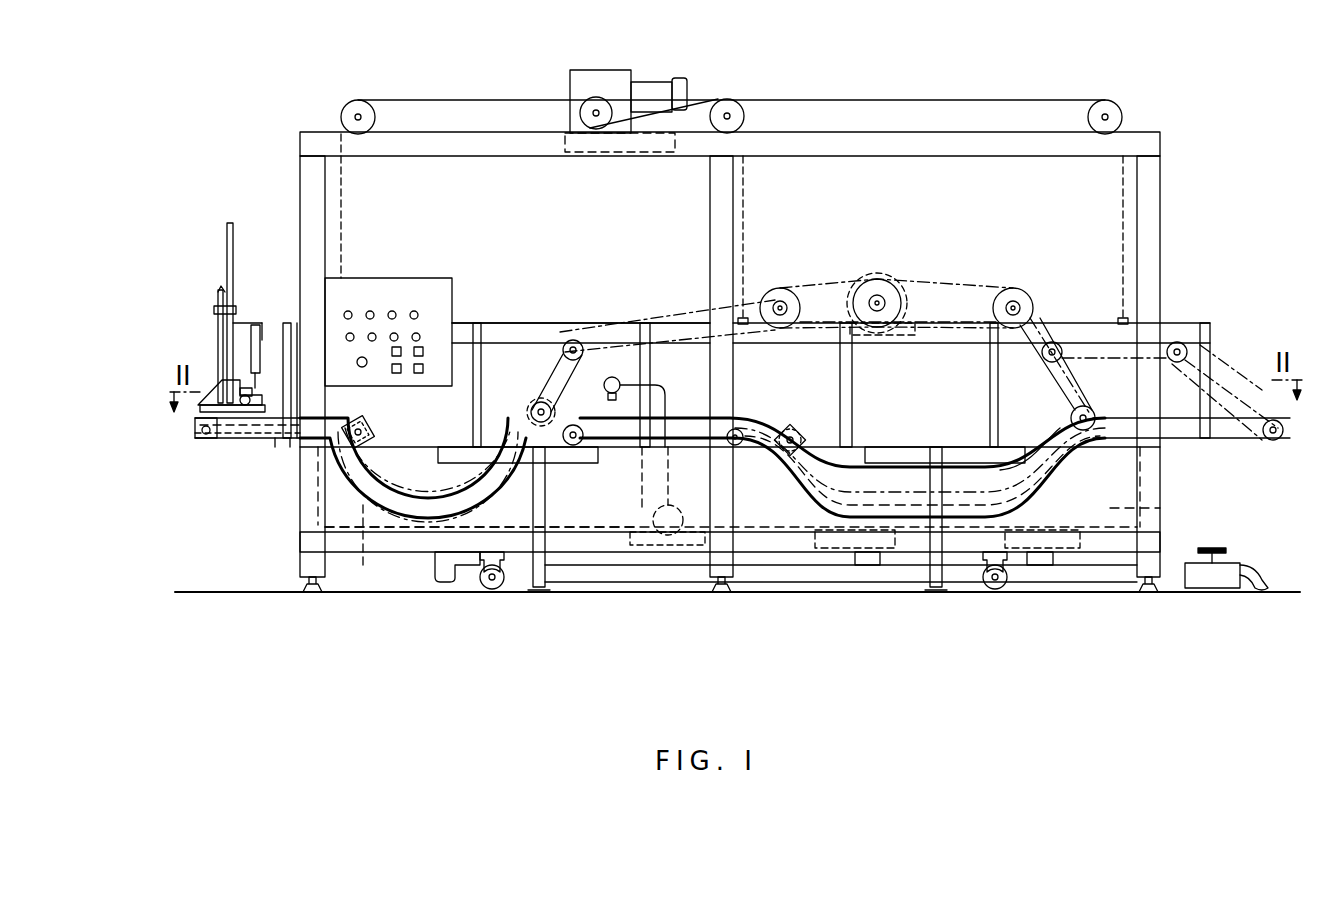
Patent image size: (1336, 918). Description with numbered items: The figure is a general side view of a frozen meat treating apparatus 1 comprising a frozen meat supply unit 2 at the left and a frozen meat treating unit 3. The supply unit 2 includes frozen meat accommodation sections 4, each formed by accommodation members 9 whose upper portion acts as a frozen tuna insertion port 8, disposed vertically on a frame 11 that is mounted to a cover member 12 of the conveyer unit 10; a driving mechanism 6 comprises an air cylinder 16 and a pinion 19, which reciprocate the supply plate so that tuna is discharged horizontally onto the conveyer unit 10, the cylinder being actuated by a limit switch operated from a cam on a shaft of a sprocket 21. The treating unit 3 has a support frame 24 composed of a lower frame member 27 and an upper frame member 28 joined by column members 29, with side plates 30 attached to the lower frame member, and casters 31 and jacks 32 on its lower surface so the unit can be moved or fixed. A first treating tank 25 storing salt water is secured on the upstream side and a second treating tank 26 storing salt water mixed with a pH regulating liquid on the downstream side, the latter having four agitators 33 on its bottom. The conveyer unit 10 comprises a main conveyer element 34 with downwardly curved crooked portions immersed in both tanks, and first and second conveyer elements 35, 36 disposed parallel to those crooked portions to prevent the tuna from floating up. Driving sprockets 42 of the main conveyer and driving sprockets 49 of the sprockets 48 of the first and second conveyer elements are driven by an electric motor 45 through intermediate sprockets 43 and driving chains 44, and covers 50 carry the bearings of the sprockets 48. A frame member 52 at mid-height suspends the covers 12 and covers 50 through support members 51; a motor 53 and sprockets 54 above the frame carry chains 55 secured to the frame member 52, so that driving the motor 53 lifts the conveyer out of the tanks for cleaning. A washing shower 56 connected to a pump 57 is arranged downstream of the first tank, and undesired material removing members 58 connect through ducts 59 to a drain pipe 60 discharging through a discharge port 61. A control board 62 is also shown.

The frozen meat treating apparatus 1 is at (733, 76).
The frozen meat supply unit 2 is at (265, 301).
The frozen meat treating unit 3 is at (759, 177).
The frozen meat accommodation section 4 is at (231, 327).
The driving mechanism 6 is at (256, 340).
The frozen tuna insertion port 8 is at (220, 288).
The accommodation member 9 is at (235, 250).
The conveyer unit 10 is at (688, 412).
The frame 11 is at (230, 439).
The cover member 12 is at (232, 440).
The air cylinder 16 is at (250, 343).
The pinion 19 is at (268, 401).
The sprocket 21 is at (205, 440).
The support frame 24 is at (734, 334).
The first treating tank 25 is at (365, 545).
The second treating tank 26 is at (1148, 509).
The lower frame member 27 is at (314, 540).
The upper frame member 28 is at (311, 138).
The column member 29 is at (314, 183).
The side plate 30 is at (365, 503).
The caster 31 is at (498, 588).
The jack 32 is at (310, 590).
The agitator 33 is at (868, 567).
The main conveyer element 34 is at (265, 442).
The first conveyer element 35 is at (530, 420).
The second conveyer element 36 is at (1058, 432).
The driving sprocket 42 is at (575, 448).
The intermediate sprocket 43 is at (563, 350).
The driving chain 44 is at (702, 324).
The electric motor 45 is at (877, 294).
The sprocket 48 is at (366, 430).
The driving sprocket 49 is at (539, 410).
The cover 50 is at (380, 446).
The support member 51 is at (288, 330).
The frame member 52 is at (540, 322).
The motor 53 is at (604, 88).
The sprocket 54 is at (376, 117).
The chain 55 is at (496, 99).
The washing shower 56 is at (614, 376).
The pump 57 is at (674, 514).
The undesired material removing member 58 is at (450, 446).
The duct 59 is at (541, 588).
The drain pipe 60 is at (452, 584).
The discharge port 61 is at (1210, 586).
The control board 62 is at (398, 290).